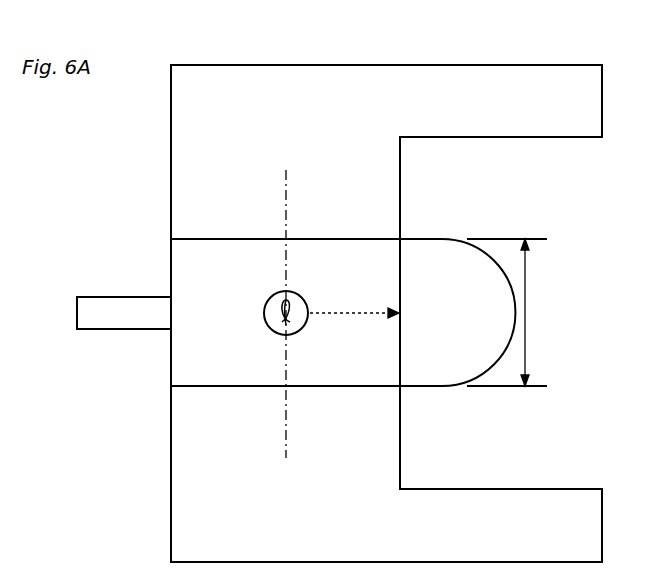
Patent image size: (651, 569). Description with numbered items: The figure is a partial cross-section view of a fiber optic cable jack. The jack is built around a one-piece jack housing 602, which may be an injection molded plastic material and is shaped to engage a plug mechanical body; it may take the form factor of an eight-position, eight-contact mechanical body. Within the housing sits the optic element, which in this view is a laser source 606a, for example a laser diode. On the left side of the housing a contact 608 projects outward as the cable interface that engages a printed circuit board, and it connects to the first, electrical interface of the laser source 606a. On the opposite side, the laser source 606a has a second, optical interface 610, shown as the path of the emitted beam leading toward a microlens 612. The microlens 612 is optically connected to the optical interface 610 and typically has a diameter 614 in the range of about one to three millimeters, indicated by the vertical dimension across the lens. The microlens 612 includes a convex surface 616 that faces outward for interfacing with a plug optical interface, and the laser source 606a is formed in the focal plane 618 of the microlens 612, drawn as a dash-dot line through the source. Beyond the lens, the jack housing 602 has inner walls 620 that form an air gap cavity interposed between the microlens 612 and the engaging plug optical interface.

The jack housing 602 is at (306, 108).
The laser source 606a is at (249, 268).
The contact 608 is at (122, 296).
The second optical interface 610 is at (399, 381).
The microlens 612 is at (477, 350).
The diameter 614 is at (525, 307).
The convex surface 616 is at (490, 250).
The focal plane 618 is at (286, 423).
The inner walls 620 is at (431, 138).